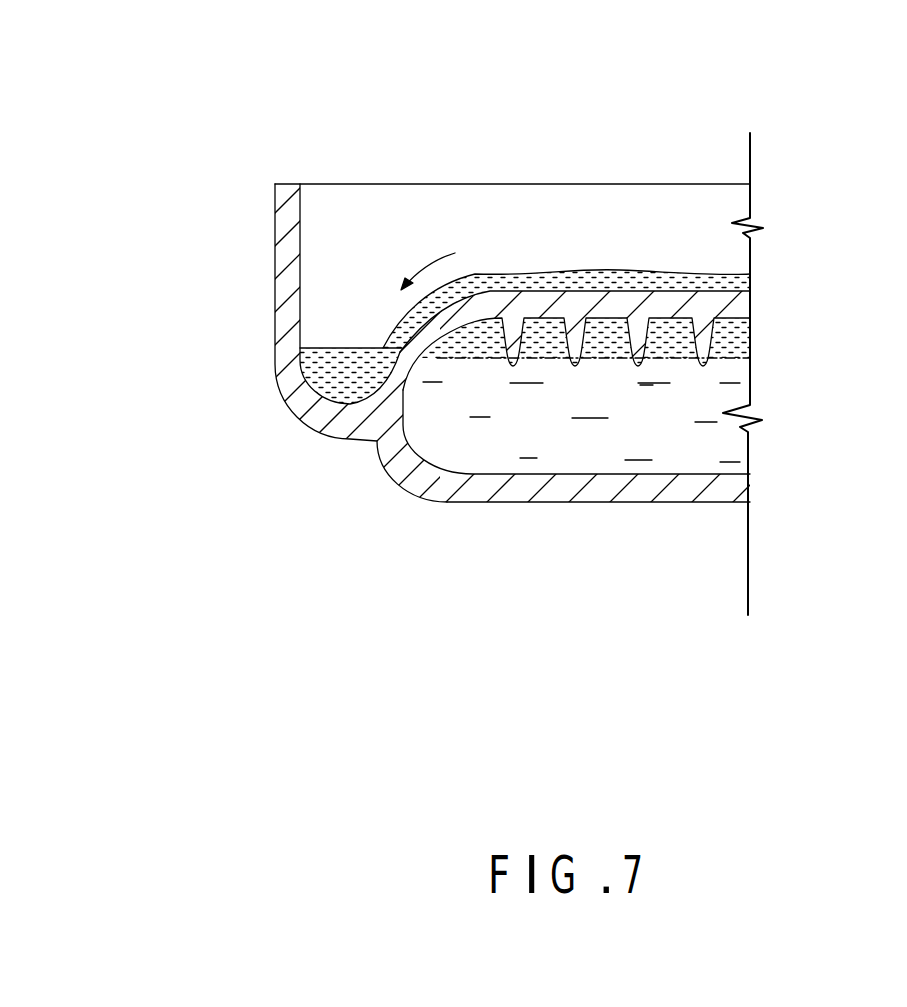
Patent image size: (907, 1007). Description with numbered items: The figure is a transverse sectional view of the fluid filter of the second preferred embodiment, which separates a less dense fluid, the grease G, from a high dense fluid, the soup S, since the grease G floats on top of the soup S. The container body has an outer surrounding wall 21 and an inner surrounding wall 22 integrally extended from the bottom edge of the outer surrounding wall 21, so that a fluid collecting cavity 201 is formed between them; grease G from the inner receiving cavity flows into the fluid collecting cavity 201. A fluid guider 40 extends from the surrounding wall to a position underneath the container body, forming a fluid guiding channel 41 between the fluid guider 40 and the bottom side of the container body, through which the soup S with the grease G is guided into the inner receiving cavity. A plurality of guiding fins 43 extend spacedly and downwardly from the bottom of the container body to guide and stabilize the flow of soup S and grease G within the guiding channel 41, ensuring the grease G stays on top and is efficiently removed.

The outer surrounding wall 21 is at (285, 255).
The fluid collecting cavity 201 is at (348, 333).
The inner surrounding wall 22 is at (452, 330).
The grease G is at (638, 283).
The guiding fins 43 is at (702, 338).
The fluid guiding channel 41 is at (672, 427).
The fluid guider 40 is at (680, 493).
The soup S is at (543, 448).